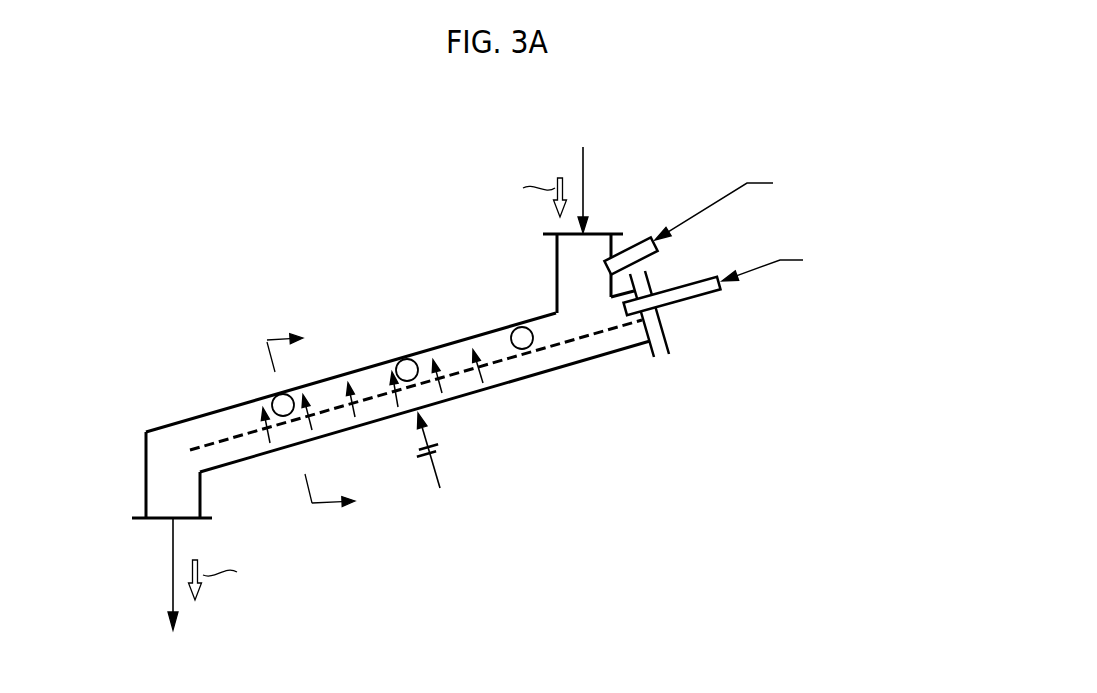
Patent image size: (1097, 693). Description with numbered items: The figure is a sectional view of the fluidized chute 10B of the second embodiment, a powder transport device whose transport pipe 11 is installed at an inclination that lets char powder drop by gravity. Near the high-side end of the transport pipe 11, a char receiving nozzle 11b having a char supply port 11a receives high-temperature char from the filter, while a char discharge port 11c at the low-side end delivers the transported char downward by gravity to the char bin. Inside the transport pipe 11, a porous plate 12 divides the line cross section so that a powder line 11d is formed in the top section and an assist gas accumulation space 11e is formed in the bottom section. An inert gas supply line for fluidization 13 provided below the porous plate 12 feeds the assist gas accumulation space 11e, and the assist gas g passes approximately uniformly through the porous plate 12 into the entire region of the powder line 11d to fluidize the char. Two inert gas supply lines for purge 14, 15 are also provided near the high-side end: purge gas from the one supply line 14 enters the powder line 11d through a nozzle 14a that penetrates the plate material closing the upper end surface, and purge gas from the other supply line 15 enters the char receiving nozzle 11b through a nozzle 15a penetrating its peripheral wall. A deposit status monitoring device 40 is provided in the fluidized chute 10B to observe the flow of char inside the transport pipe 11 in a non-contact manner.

The fluidized chute 10B is at (415, 247).
The transport pipe 11 is at (325, 379).
The char supply port 11a is at (602, 232).
The char receiving nozzle 11b is at (556, 255).
The char discharge port 11c is at (155, 520).
The powder line 11d is at (365, 382).
The assist gas accumulation space 11e is at (378, 414).
The porous plate 12 is at (572, 345).
The inert gas supply line for fluidization 13 is at (433, 470).
The inert gas supply line for purge 14 is at (774, 270).
The nozzle 14a is at (707, 295).
The inert gas supply line for purge 15 is at (723, 200).
The nozzle 15a is at (655, 258).
The deposit status monitoring device 40 is at (273, 397).
The assist gas g is at (482, 383).